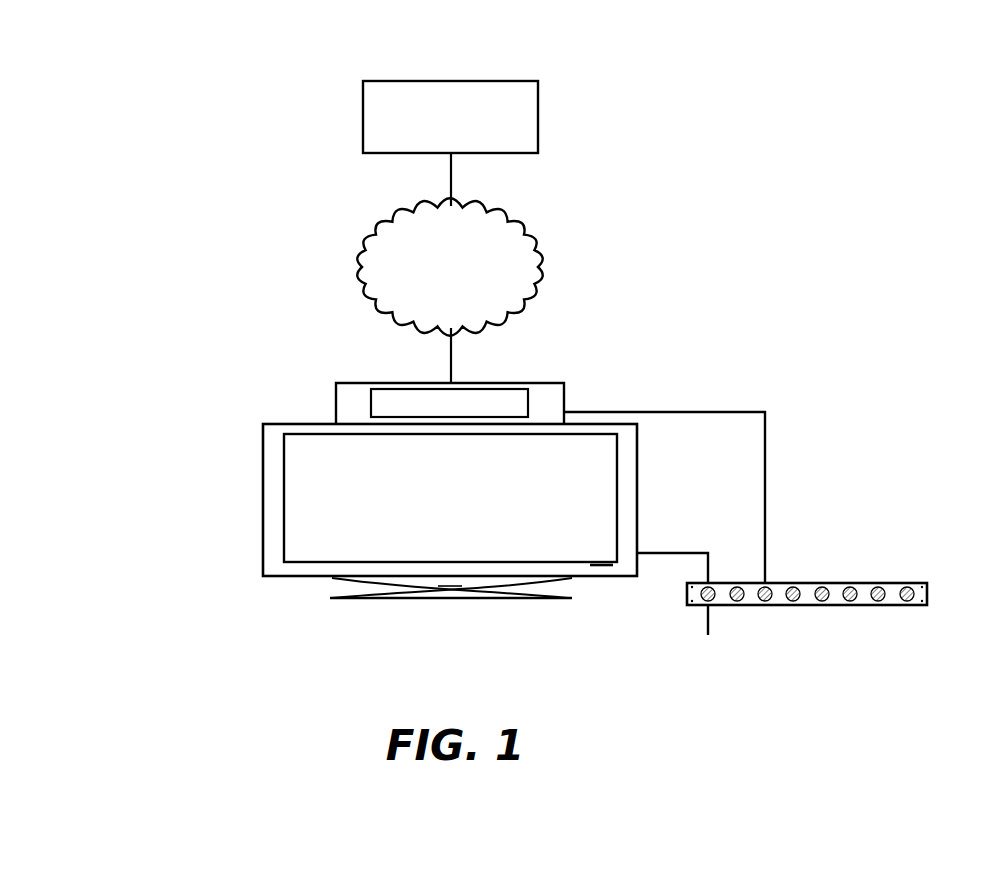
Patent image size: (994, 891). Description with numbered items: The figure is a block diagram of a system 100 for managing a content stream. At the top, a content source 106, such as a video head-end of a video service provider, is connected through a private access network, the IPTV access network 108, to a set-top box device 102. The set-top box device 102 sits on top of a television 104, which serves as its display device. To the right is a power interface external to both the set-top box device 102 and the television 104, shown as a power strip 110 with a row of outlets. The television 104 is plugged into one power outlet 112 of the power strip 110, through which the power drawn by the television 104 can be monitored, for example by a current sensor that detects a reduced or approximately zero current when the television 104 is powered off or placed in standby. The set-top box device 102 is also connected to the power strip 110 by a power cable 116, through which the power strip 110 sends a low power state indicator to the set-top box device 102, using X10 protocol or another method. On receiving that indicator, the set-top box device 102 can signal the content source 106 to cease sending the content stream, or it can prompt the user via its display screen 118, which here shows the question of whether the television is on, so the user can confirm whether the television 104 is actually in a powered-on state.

The system 100 is at (118, 94).
The set-top box device 102 is at (336, 402).
The television 104 is at (263, 477).
The content source 106 is at (363, 117).
The IPTV access network 108 is at (360, 267).
The power strip 110 is at (805, 582).
The power outlet 112 is at (718, 584).
The power cable 116 is at (765, 430).
The display screen 118 is at (407, 388).